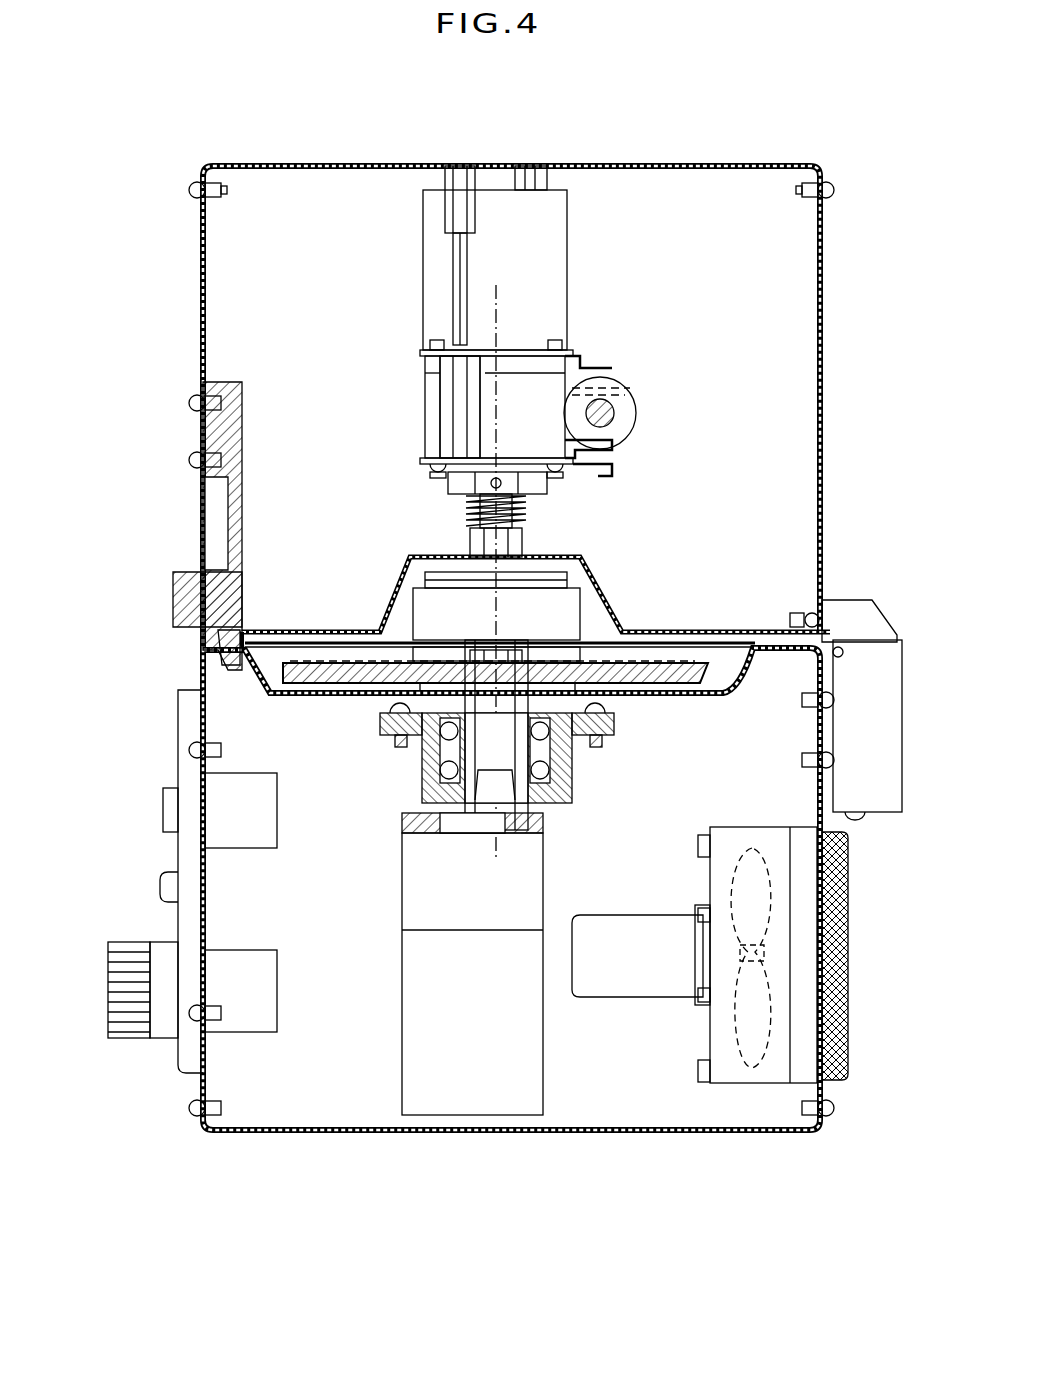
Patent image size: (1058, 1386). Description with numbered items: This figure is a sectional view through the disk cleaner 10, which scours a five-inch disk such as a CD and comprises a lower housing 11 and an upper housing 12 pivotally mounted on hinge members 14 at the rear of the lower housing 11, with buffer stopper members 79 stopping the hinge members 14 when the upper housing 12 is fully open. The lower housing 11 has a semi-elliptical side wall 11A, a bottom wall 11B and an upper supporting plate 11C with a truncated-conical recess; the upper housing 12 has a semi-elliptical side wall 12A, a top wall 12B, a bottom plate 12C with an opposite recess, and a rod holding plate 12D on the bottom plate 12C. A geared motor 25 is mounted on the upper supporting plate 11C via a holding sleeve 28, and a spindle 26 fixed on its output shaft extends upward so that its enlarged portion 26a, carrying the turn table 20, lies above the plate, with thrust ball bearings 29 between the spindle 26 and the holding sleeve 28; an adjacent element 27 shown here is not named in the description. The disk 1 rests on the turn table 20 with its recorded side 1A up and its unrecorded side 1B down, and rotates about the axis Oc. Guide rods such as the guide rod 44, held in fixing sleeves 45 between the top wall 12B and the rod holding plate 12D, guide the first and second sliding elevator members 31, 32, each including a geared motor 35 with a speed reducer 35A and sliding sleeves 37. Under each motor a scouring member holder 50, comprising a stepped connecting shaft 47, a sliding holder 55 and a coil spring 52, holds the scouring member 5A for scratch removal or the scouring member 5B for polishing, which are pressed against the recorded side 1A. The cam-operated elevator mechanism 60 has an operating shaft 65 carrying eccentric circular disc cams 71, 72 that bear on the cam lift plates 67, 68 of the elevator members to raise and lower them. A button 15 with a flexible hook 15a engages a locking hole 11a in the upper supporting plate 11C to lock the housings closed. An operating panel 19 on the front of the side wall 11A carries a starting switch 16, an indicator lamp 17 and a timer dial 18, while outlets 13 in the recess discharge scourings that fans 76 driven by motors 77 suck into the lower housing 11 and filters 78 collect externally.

The disk cleaner 10 is at (330, 155).
The upper housing 12 is at (823, 305).
The semi-elliptical side wall 12A is at (822, 400).
The top wall 12B is at (580, 163).
The bottom plate 12C is at (620, 590).
The rod holding plate 12D is at (600, 565).
The lower housing 11 is at (172, 738).
The locking hole 11a is at (250, 675).
The semi-elliptical side wall 11A is at (824, 730).
The bottom wall 11B is at (580, 1133).
The upper supporting plate 11C is at (700, 696).
The outlets 13 is at (745, 675).
The hinge members 14 is at (862, 605).
The button 15 is at (198, 598).
The hook 15a is at (228, 660).
The starting switch 16 is at (165, 808).
The indicator lamp 17 is at (162, 885).
The dial of a timer 18 is at (115, 965).
The operating panel 19 is at (185, 1050).
The turn table 20 is at (330, 692).
The geared motor 25 is at (410, 1008).
The spindle 26 is at (560, 735).
The enlarged portion 26a is at (425, 730).
The bearing housing 27 is at (430, 800).
The holding sleeve 28 is at (560, 782).
The thrust ball bearings 29 is at (432, 760).
The disk 1 is at (480, 613).
The recorded side 1A is at (323, 672).
The unrecorded side 1B is at (300, 663).
The scouring member for scratch removal 5A is at (600, 643).
The scouring member for polishing 5B is at (572, 606).
The first sliding elevator member 31 is at (422, 475).
The second sliding elevator member 32 is at (422, 388).
The geared motor 35 is at (570, 233).
The speed reducer 35A is at (530, 392).
The sliding sleeves 37 is at (452, 396).
The guide rod 44 is at (455, 262).
The fixing sleeves 45 is at (468, 226).
The stepped connecting shaft 47 is at (470, 490).
The scouring member holder 50 is at (400, 600).
The coil spring 52 is at (520, 500).
The sliding holder 55 is at (520, 545).
The cam-operated elevator mechanism 60 is at (662, 392).
The operating shaft 65 is at (608, 411).
The cam lift plates 67 is at (635, 388).
The cam lift plates 68 is at (592, 365).
The circular disc cam 71 is at (622, 438).
The circular disc cam 72 is at (615, 378).
The fans 76 is at (730, 830).
The motors 77 is at (628, 990).
The filters 78 is at (845, 1032).
The buffer stopper members 79 is at (890, 762).
The rotational axis Oc is at (496, 292).